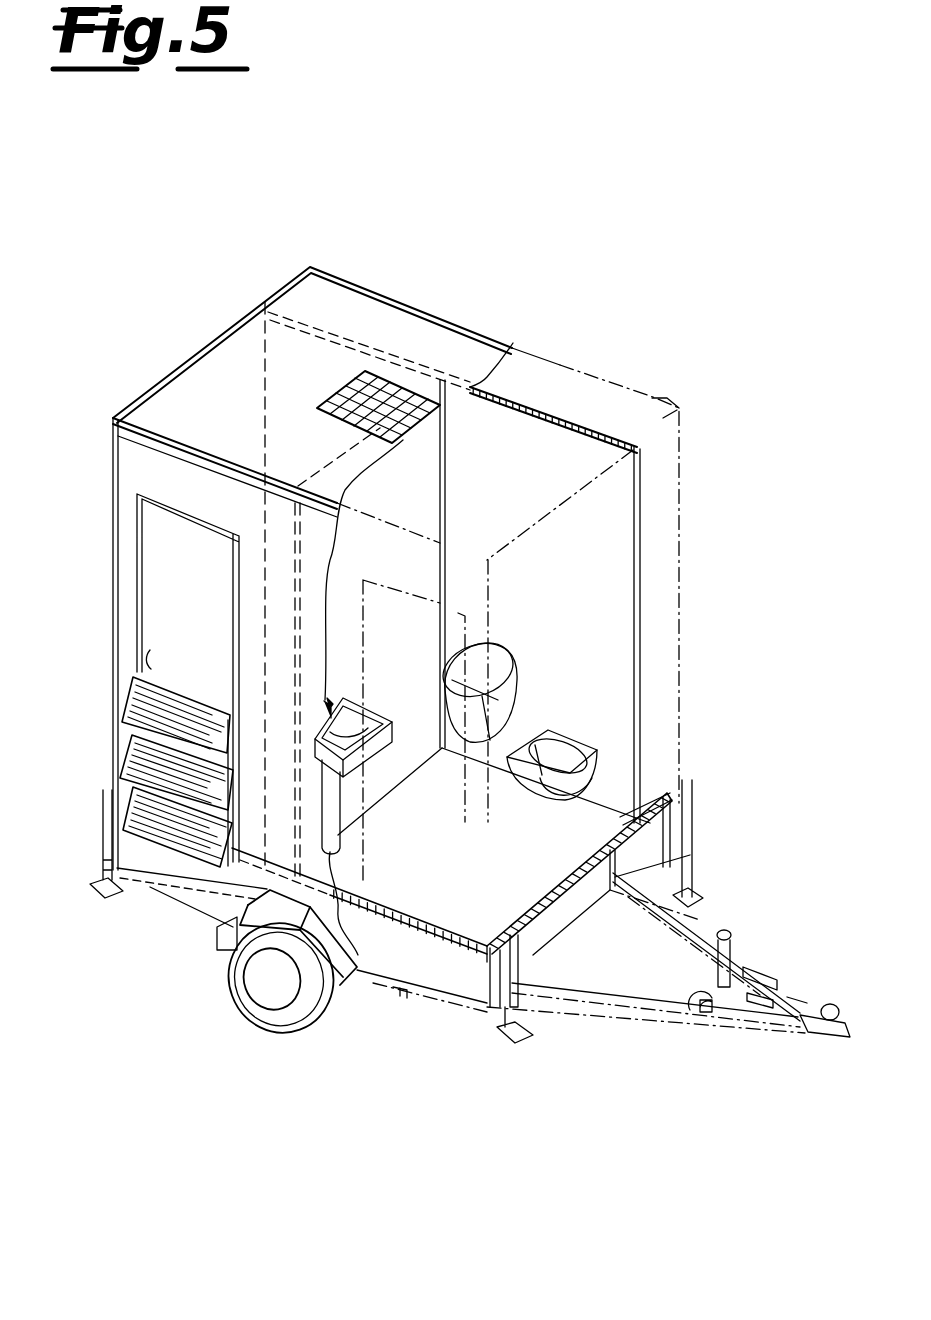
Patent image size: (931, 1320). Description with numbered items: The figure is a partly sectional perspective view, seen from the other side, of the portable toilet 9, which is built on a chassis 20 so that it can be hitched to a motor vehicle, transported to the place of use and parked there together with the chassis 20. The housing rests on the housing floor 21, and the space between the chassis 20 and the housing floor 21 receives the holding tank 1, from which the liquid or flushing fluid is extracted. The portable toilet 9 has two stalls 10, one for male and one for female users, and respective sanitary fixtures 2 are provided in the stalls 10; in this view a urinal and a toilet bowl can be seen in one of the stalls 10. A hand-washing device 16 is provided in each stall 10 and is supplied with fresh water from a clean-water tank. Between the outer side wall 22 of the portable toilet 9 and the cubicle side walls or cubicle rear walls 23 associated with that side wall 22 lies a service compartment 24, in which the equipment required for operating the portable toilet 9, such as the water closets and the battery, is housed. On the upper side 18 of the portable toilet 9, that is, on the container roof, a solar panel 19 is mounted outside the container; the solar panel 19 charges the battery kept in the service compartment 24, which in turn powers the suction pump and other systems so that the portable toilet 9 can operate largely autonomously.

The holding tank 1 is at (600, 882).
The sanitary fixtures 2 is at (565, 750).
The portable toilet 9 is at (355, 212).
The stalls 10 is at (191, 367).
The hand-washing device 16 is at (385, 742).
The upper side 18 is at (367, 307).
The solar panel 19 is at (385, 390).
The chassis 20 is at (376, 998).
The housing floor 21 is at (432, 900).
The side wall 22 is at (128, 462).
The cubicle rear walls 23 is at (595, 448).
The service compartment 24 is at (534, 355).